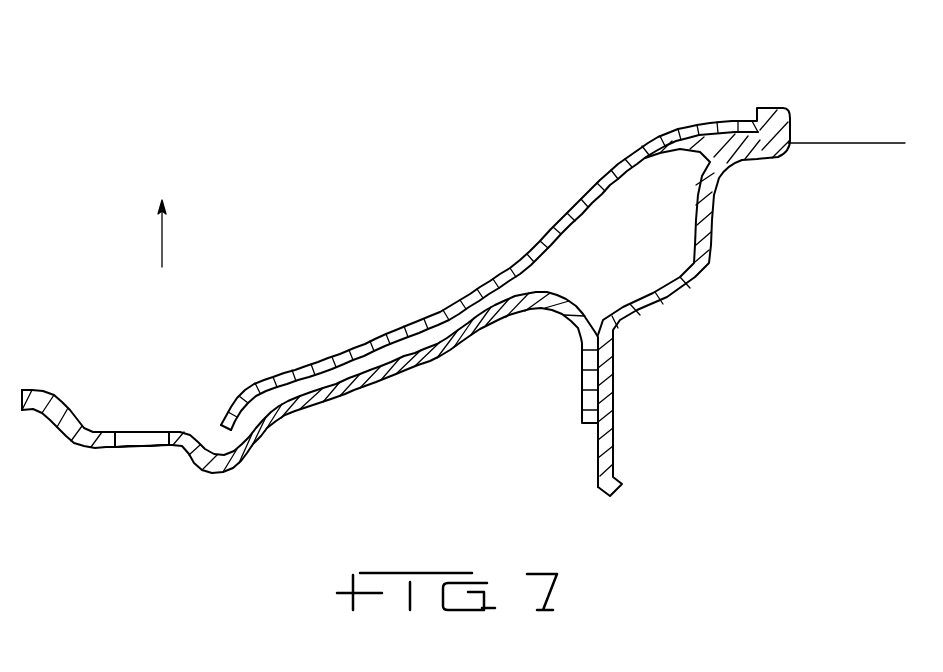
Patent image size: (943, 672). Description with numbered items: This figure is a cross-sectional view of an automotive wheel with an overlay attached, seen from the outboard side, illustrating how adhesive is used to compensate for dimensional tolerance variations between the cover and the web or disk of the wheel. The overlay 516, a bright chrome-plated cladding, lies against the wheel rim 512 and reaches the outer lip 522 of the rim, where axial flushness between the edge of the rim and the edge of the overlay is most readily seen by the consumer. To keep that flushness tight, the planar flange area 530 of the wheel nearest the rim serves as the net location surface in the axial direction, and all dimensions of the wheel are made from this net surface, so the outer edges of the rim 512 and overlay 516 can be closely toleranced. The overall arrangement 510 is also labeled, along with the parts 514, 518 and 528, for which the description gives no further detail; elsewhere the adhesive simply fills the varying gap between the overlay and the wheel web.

The trim assembly 510 is at (409, 241).
The wheel rim 512 is at (713, 253).
The inner panel 514 is at (397, 372).
The overlay 516 is at (519, 262).
The cavity 518 is at (623, 235).
The outer lip 522 is at (783, 108).
The seal strip 528 is at (164, 440).
The planar flange area 530 is at (737, 135).